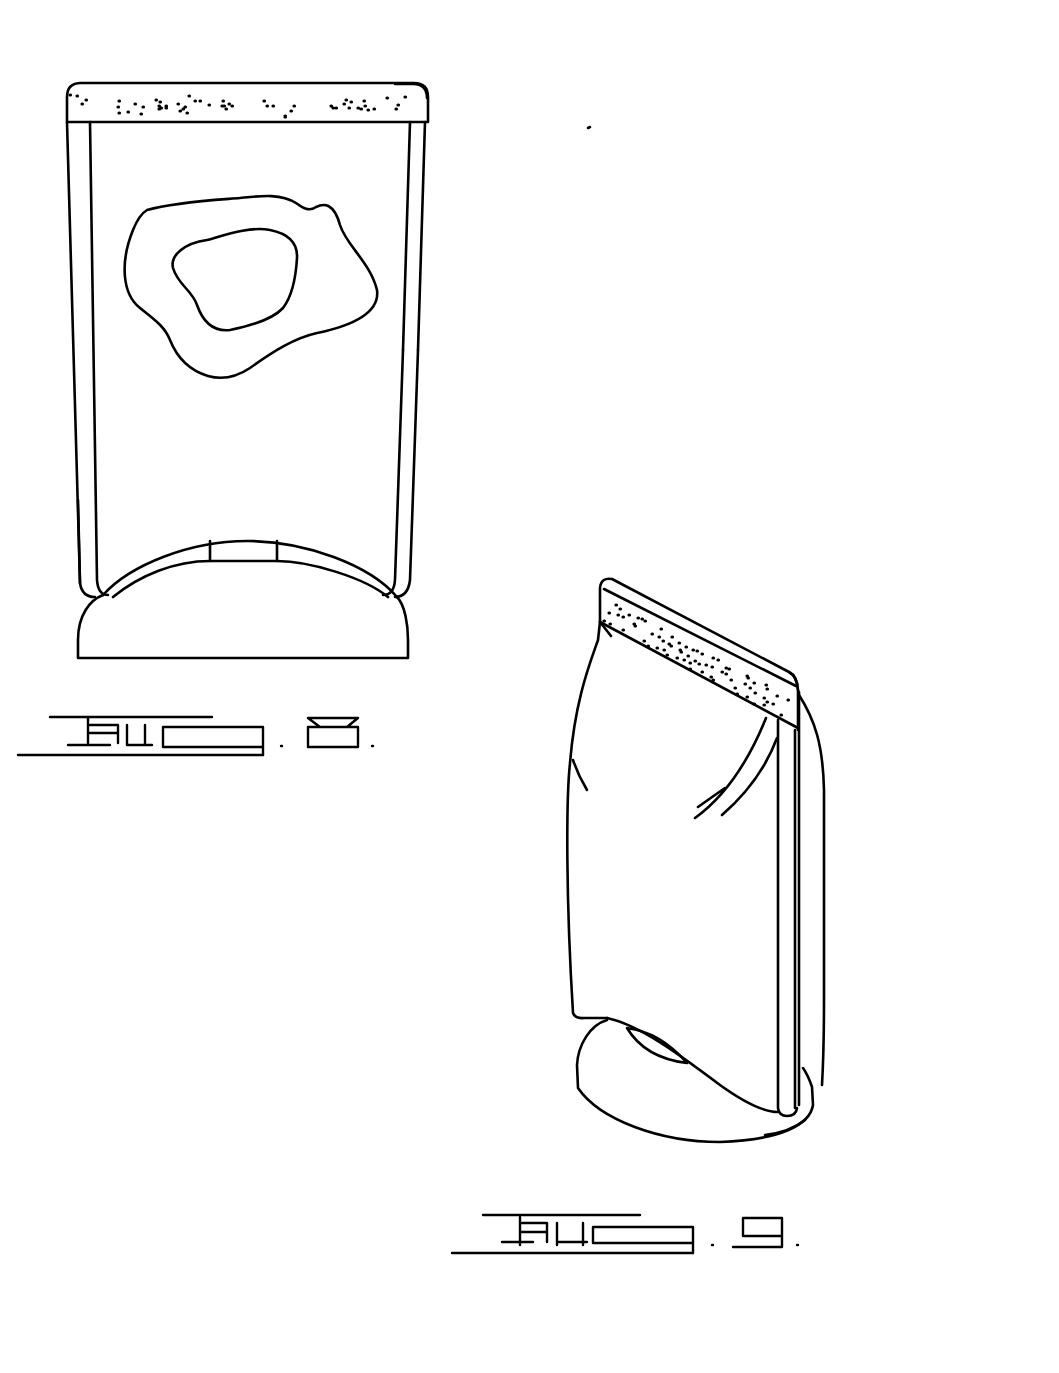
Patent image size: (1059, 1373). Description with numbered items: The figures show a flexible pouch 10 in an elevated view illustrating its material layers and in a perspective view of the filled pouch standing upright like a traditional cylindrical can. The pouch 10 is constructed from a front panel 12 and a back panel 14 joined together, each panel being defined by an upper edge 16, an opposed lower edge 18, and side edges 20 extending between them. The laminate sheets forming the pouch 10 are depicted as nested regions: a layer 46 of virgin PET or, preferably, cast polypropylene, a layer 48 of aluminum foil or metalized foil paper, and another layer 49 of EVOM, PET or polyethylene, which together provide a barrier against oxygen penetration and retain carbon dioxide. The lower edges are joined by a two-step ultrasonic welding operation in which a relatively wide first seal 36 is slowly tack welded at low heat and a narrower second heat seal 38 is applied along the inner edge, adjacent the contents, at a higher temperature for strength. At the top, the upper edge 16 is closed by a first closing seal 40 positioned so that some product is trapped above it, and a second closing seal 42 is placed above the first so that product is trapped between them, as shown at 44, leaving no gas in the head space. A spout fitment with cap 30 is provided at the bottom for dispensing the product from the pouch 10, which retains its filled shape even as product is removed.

In FIG. 8, the pouch 10 is at (593, 117).
In FIG. 8, the front panel 12 is at (372, 407).
In FIG. 9, the front panel 12 is at (612, 875).
In FIG. 8, the back panel 14 is at (428, 157).
In FIG. 9, the back panel 14 is at (807, 773).
In FIG. 8, the upper edge 16 is at (172, 83).
In FIG. 9, the upper edge 16 is at (643, 598).
In FIG. 8, the lower edge 18 is at (385, 597).
In FIG. 9, the lower edge 18 is at (773, 1132).
In FIG. 8, the side edge 20 is at (86, 469).
In FIG. 9, the side edge 20 is at (788, 872).
In FIG. 8, the spout fitment with cap 30 is at (346, 660).
In FIG. 9, the spout fitment with cap 30 is at (607, 1120).
In FIG. 8, the first seal 36 is at (415, 472).
In FIG. 9, the first seal 36 is at (800, 935).
In FIG. 8, the second heat seal 38 is at (403, 291).
In FIG. 9, the second heat seal 38 is at (778, 900).
In FIG. 9, the first closing seal 40 is at (652, 657).
In FIG. 8, the second closing seal 42 is at (290, 83).
In FIG. 9, the second closing seal 42 is at (710, 637).
In FIG. 8, the trapped product region 44 is at (380, 110).
In FIG. 9, the trapped product region 44 is at (760, 690).
In FIG. 8, the cast polypropylene layer 46 is at (323, 307).
In FIG. 8, the metalized foil paper layer 48 is at (380, 222).
In FIG. 8, the another layer 49 is at (235, 252).